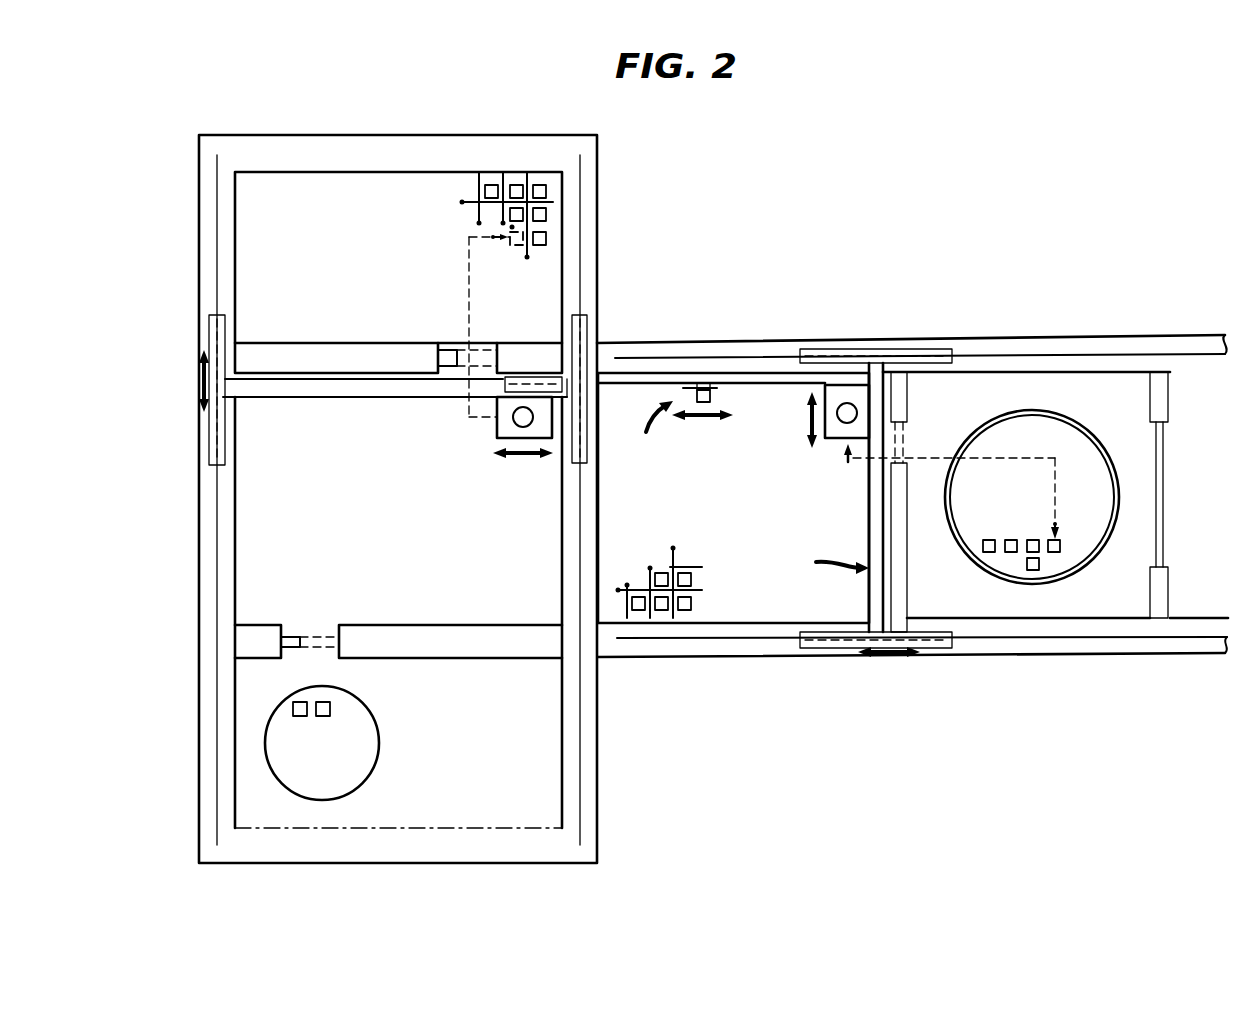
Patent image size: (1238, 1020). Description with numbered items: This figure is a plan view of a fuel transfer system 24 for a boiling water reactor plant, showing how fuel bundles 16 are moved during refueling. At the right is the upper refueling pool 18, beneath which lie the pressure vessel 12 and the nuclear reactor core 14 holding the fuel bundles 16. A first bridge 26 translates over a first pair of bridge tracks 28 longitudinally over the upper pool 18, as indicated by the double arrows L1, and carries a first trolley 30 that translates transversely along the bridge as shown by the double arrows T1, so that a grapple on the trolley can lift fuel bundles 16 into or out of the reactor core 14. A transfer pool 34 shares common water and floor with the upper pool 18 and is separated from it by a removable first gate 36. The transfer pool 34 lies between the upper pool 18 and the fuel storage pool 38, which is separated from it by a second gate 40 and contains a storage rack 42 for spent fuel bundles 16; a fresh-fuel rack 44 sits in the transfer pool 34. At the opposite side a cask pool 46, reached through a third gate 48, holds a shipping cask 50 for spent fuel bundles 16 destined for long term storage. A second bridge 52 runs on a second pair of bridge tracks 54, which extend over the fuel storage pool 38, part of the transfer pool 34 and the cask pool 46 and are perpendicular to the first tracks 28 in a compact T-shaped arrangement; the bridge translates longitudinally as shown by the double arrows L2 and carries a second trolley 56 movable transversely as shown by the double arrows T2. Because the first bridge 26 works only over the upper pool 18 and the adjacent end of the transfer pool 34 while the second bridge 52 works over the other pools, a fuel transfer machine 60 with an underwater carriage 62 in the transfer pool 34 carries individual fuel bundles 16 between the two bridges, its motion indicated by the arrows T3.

The pressure vessel 12 is at (1086, 419).
The nuclear reactor core 14 is at (1107, 447).
The fuel bundles 16 is at (545, 188).
The upper refueling pool 18 is at (1105, 600).
The fuel transfer system 24 is at (825, 308).
The first bridge 26 is at (830, 559).
The first pair of bridge tracks 28 is at (708, 357).
The first trolley 30 is at (840, 442).
The transfer pool 34 is at (621, 502).
The first gate 36 is at (906, 467).
The fuel storage pool 38 is at (318, 311).
The second gate 40 is at (448, 350).
The storage rack 42 is at (478, 192).
The fresh-fuel rack 44 is at (676, 560).
The cask pool 46 is at (388, 810).
The third gate 48 is at (294, 637).
The shipping cask 50 is at (368, 712).
The second bridge 52 is at (276, 412).
The second pair of bridge tracks 54 is at (199, 583).
The second trolley 56 is at (497, 432).
The fuel transfer machine 60 is at (653, 435).
The carriage 62 is at (717, 394).
The longitudinal translation of first bridge L1 is at (887, 658).
The longitudinal translation of second bridge L2 is at (200, 381).
The transverse translation of first trolley T1 is at (810, 420).
The transverse translation of second trolley T2 is at (516, 460).
The transfer motion T3 is at (701, 418).